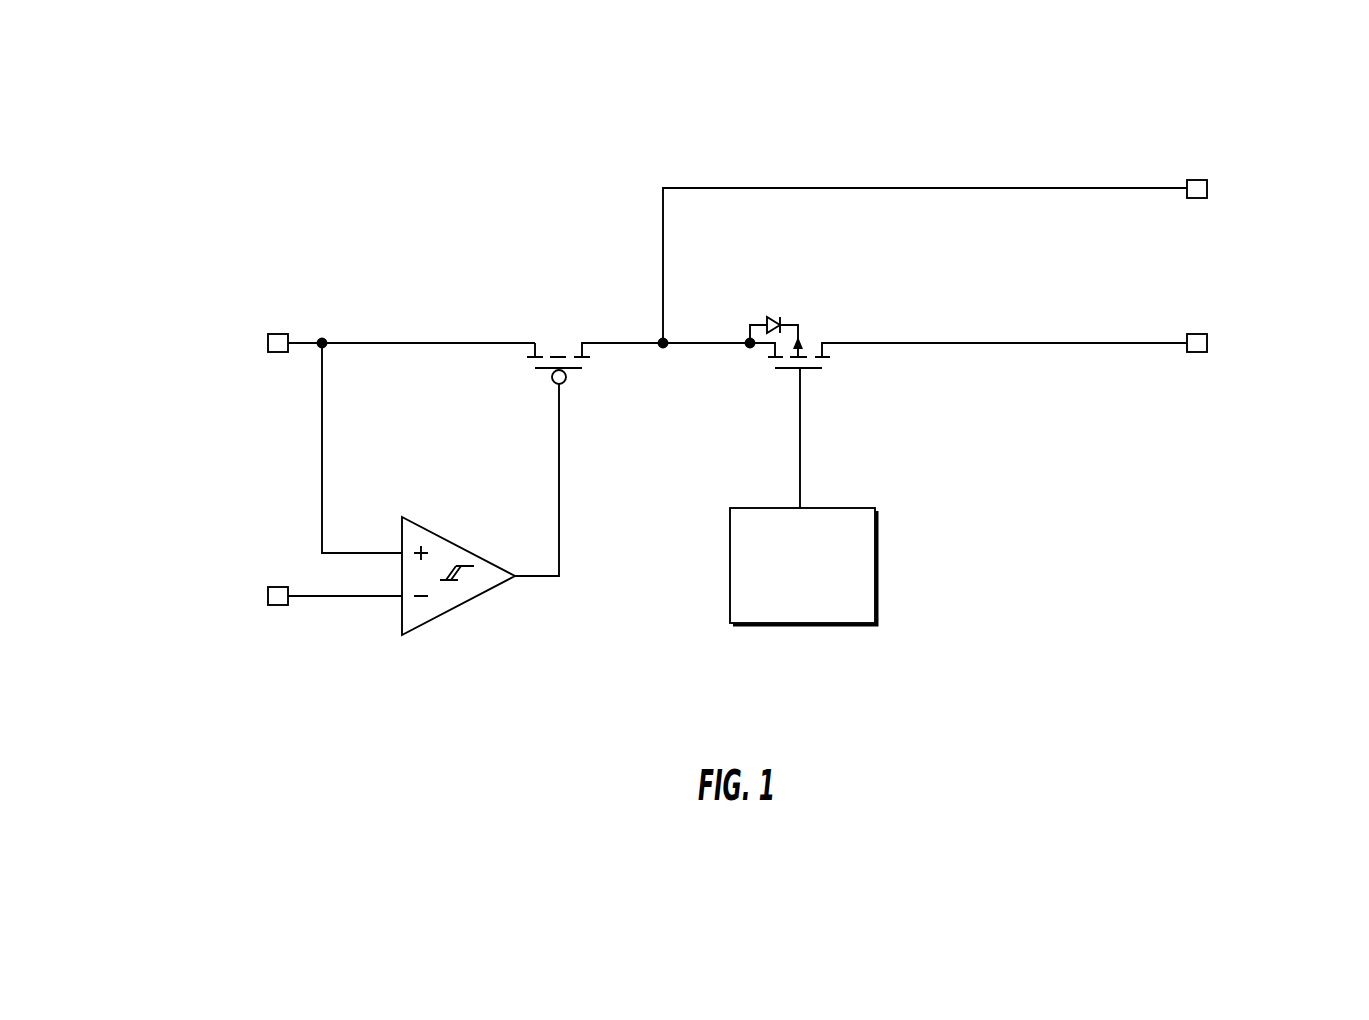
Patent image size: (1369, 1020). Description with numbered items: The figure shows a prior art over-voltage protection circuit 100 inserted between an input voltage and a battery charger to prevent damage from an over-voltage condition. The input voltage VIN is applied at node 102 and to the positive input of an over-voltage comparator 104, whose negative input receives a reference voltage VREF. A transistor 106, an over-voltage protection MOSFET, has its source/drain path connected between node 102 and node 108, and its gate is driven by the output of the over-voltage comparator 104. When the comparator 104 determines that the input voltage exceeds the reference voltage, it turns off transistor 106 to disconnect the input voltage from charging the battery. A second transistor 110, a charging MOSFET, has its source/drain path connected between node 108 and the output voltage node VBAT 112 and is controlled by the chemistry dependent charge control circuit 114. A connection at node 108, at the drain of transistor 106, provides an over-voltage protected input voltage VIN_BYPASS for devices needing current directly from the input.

The over-voltage protection circuit 100 is at (205, 189).
The node 102 is at (322, 343).
The over-voltage comparator 104 is at (458, 605).
The transistor 106 is at (566, 376).
The node 108 is at (663, 343).
The second transistor 110 is at (813, 369).
The output voltage node 112 is at (1195, 355).
The charge control circuit 114 is at (857, 625).